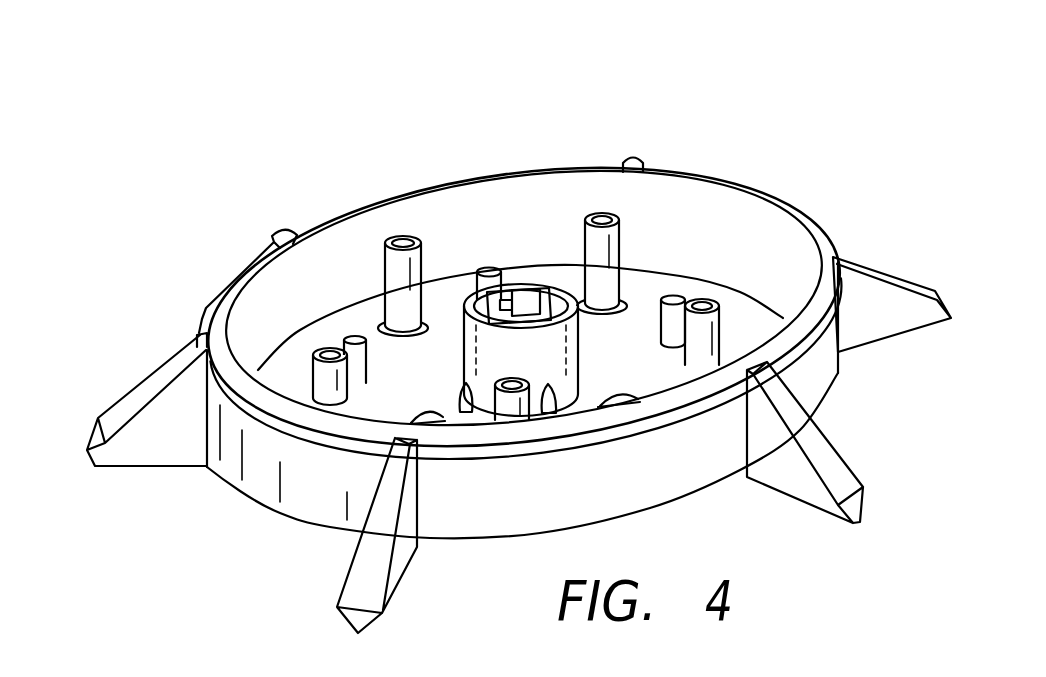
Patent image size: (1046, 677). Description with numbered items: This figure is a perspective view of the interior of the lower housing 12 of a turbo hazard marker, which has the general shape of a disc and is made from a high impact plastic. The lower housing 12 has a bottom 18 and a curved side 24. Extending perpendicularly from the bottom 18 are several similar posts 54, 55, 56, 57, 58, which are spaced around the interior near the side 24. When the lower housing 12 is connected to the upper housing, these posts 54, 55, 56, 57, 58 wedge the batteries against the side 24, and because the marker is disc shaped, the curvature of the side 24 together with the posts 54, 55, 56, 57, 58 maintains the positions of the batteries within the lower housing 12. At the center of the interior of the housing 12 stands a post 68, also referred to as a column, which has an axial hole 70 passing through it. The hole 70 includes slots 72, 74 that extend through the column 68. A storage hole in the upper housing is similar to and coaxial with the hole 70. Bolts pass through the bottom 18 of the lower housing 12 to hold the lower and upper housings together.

The lower housing 12 is at (328, 223).
The bottom 18 is at (747, 323).
The side 24 is at (717, 222).
The post 54 is at (433, 413).
The post 55 is at (337, 337).
The post 56 is at (488, 277).
The post 57 is at (662, 317).
The post 58 is at (605, 392).
The post 68 is at (521, 253).
The axial hole 70 is at (523, 297).
The slot 72 is at (540, 313).
The slot 74 is at (555, 289).